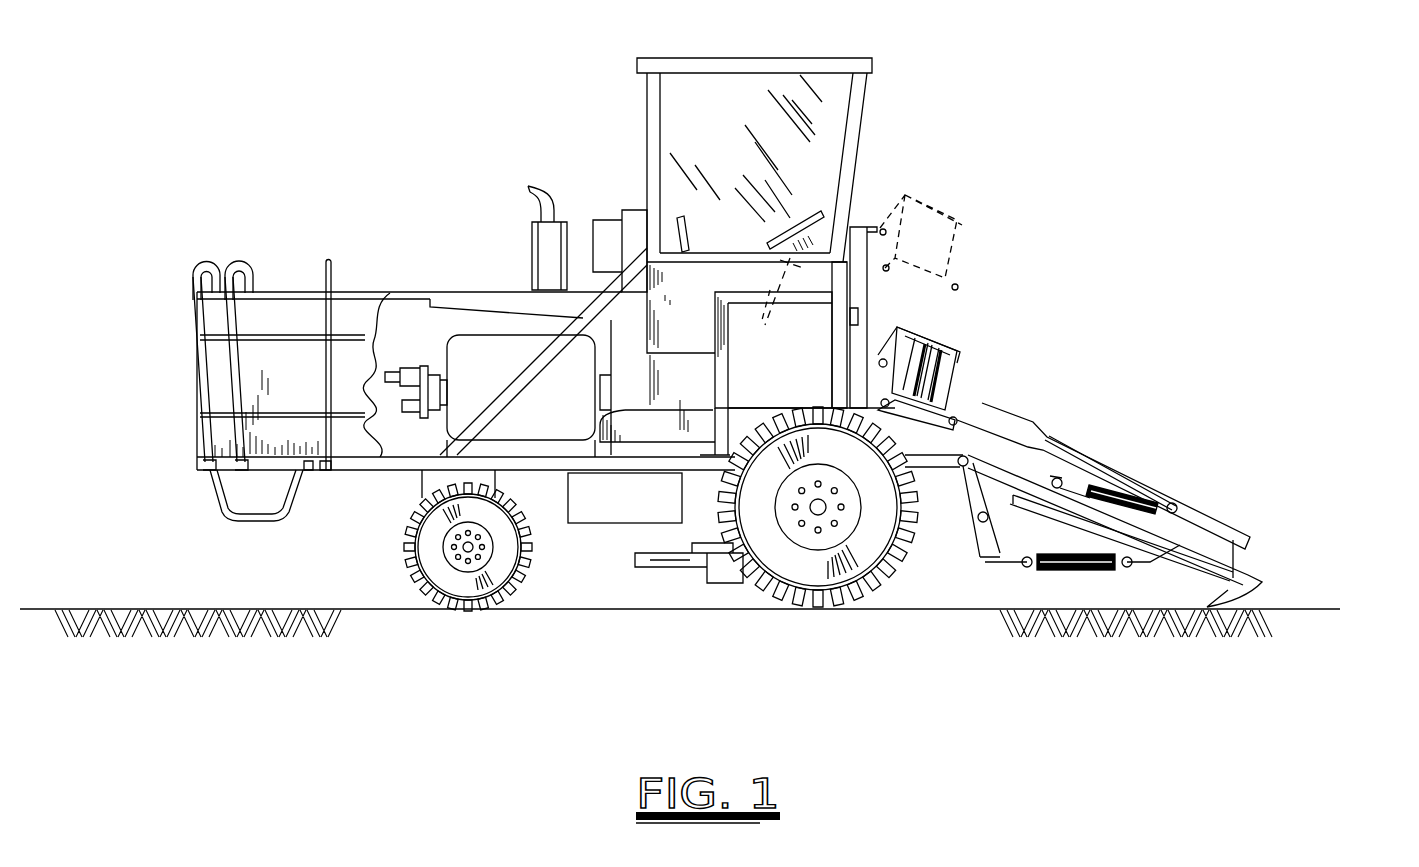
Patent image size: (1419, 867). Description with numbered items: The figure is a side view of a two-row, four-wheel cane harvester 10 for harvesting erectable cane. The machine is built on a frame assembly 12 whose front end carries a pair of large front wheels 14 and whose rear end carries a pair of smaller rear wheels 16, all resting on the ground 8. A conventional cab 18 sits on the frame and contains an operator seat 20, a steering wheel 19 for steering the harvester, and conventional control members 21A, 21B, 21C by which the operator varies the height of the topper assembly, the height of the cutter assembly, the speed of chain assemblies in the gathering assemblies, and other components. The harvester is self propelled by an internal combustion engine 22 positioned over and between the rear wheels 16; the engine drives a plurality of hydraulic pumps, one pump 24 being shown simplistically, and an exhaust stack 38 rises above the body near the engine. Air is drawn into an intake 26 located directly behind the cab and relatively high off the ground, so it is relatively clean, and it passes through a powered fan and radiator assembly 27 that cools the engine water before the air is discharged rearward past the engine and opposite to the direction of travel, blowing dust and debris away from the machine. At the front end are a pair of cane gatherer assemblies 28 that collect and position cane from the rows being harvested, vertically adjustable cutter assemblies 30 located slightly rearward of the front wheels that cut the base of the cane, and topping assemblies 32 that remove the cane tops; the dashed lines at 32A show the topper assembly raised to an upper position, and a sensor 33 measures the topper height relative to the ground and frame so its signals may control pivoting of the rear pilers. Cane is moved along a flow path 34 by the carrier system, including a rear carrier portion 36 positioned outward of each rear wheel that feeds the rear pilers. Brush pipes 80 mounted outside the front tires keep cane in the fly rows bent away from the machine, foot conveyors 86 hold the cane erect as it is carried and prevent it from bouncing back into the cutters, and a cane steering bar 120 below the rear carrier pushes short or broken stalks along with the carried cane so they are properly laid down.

The ground 8 is at (1295, 606).
The cane harvester 10 is at (1128, 346).
The frame assembly 12 is at (527, 465).
The front wheels 14 is at (900, 585).
The rear wheels 16 is at (495, 592).
The cab 18 is at (645, 143).
The steering wheel 19 is at (800, 225).
The operator seat 20 is at (684, 215).
The control member 21A is at (723, 240).
The control member 21B is at (780, 270).
The control member 21C is at (772, 290).
The internal combustion engine 22 is at (500, 360).
The hydraulic pump 24 is at (395, 370).
The intake 26 is at (607, 228).
The fan and radiator assembly 27 is at (605, 385).
The cane gatherer assembly 28 is at (1140, 489).
The cutter assembly 30 is at (715, 577).
The topping assembly 32 is at (965, 355).
The topper assembly in upper position 32A is at (963, 222).
The sensor 33 is at (860, 315).
The flow path 34 is at (712, 467).
The rear carrier assembly 36 is at (465, 467).
The exhaust stack 38 is at (545, 243).
The brush pipes 80 is at (238, 373).
The foot conveyors 86 is at (665, 563).
The cane steering bar 120 is at (225, 520).